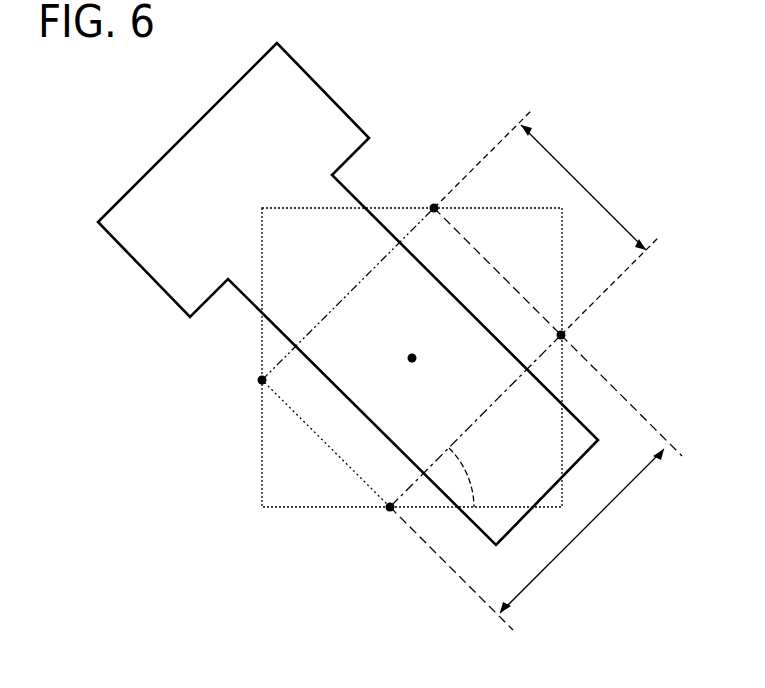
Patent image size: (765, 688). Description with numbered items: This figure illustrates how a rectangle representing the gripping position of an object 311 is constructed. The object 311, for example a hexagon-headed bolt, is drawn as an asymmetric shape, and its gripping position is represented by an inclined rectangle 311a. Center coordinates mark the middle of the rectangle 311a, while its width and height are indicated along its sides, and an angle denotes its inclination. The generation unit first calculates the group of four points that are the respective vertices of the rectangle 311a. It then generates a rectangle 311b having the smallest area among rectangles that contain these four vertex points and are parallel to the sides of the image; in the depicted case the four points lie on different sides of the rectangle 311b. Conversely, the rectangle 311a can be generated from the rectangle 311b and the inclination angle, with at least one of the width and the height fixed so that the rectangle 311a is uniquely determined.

The object 311 is at (142, 274).
The rectangle 311a is at (517, 289).
The rectangle 311b is at (287, 207).